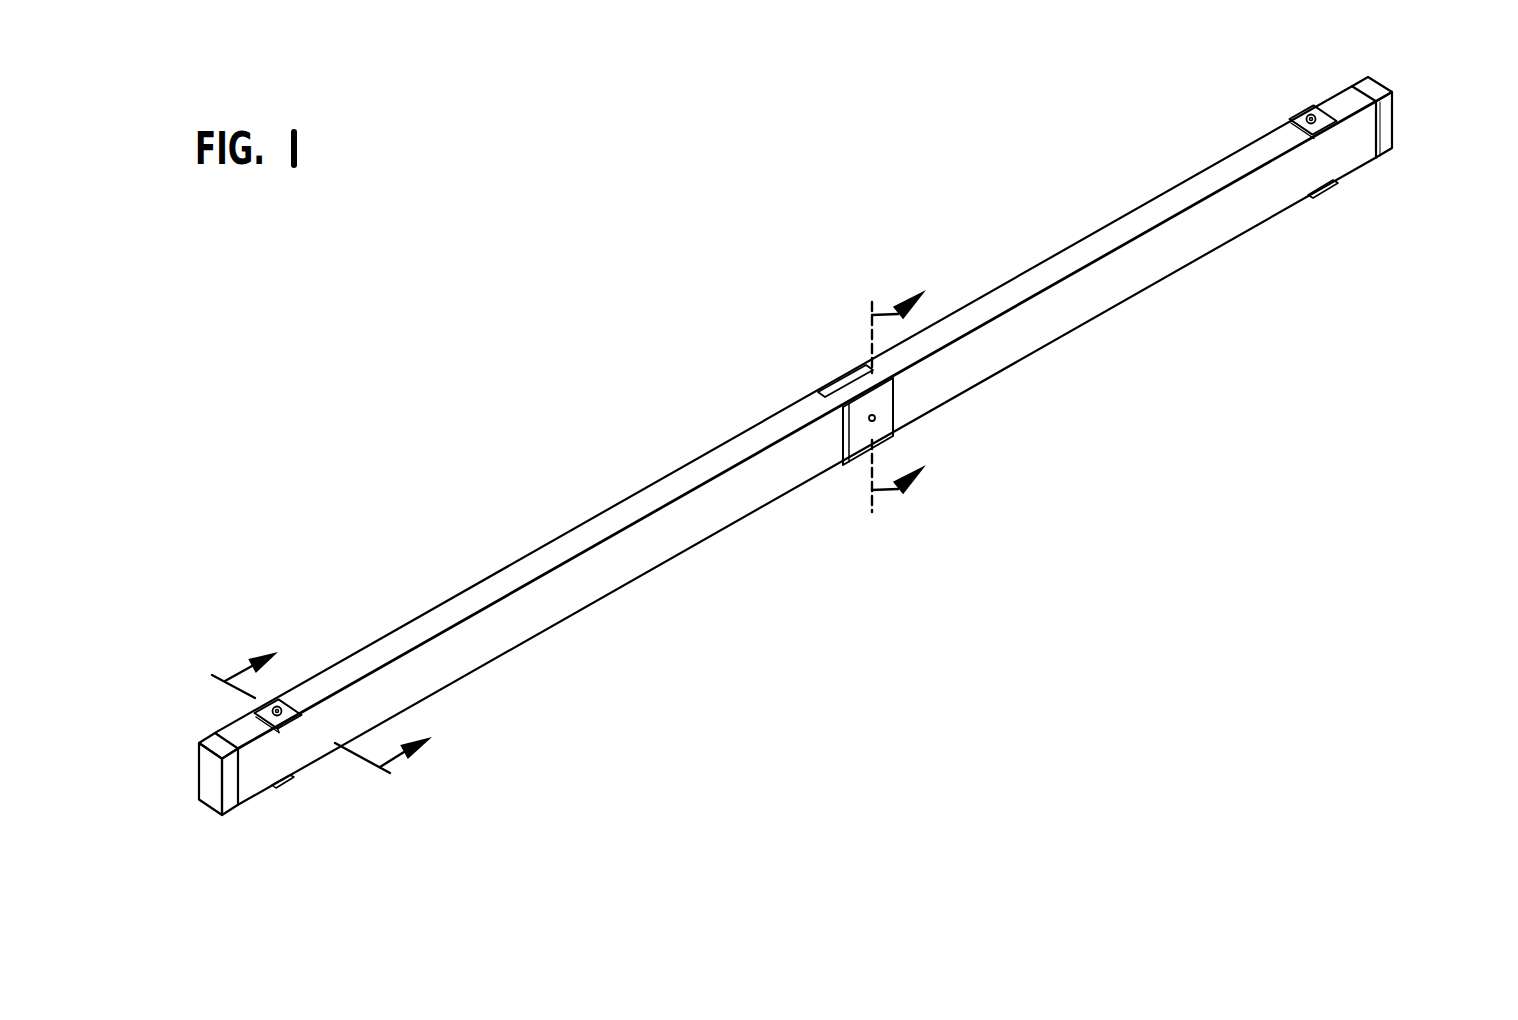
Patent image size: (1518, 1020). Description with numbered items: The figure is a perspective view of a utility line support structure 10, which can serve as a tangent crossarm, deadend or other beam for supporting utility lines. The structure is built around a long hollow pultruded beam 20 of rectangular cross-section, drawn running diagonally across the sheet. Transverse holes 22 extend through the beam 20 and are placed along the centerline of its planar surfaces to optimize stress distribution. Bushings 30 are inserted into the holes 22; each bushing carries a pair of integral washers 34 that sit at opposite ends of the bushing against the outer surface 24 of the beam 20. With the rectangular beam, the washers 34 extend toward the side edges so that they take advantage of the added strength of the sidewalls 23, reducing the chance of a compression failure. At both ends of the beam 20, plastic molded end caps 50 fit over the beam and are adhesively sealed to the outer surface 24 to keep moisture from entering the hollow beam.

The utility line support structure 10 is at (1078, 168).
The hollow pultruded beam 20 is at (795, 445).
The transverse holes 22 is at (282, 705).
The sidewalls 23 is at (628, 515).
The outer surface 24 is at (1008, 357).
The bushings 30 is at (800, 382).
The integral washers 34 is at (862, 450).
The end caps 50 is at (257, 815).